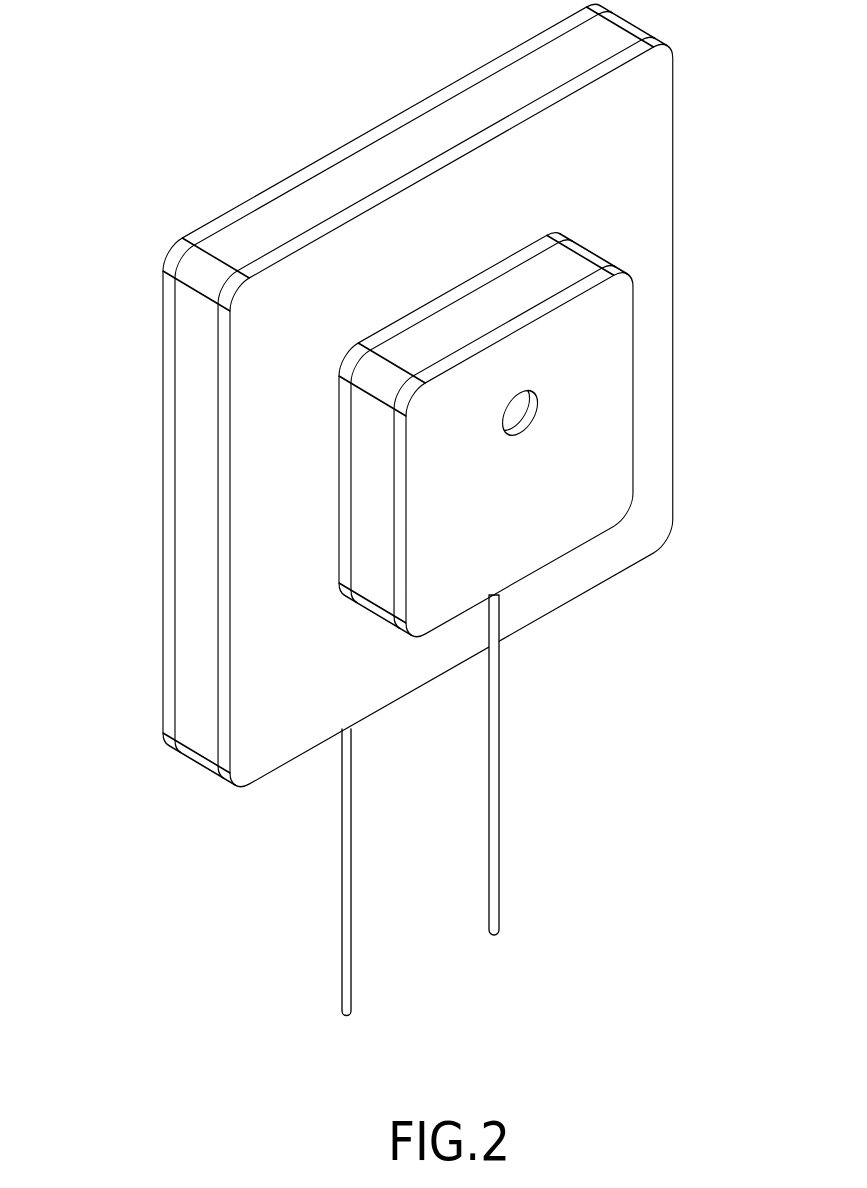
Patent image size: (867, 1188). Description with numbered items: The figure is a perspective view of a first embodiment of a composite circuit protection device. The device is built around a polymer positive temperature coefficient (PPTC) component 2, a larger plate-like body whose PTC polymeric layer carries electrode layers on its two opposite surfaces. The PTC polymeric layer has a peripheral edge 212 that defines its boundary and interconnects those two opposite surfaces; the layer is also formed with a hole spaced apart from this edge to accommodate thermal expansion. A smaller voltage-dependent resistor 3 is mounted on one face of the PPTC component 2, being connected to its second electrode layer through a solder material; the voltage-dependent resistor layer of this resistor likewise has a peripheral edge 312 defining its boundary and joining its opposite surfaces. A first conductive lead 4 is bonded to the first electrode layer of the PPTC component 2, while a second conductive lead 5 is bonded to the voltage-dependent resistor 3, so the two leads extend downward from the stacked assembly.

The polymer positive temperature coefficient (PPTC) component 2 is at (405, 442).
The peripheral edge 212 is at (197, 502).
The voltage-dependent resistor 3 is at (493, 459).
The peripheral edge 312 is at (368, 458).
The first conductive lead 4 is at (346, 965).
The second conductive lead 5 is at (493, 887).